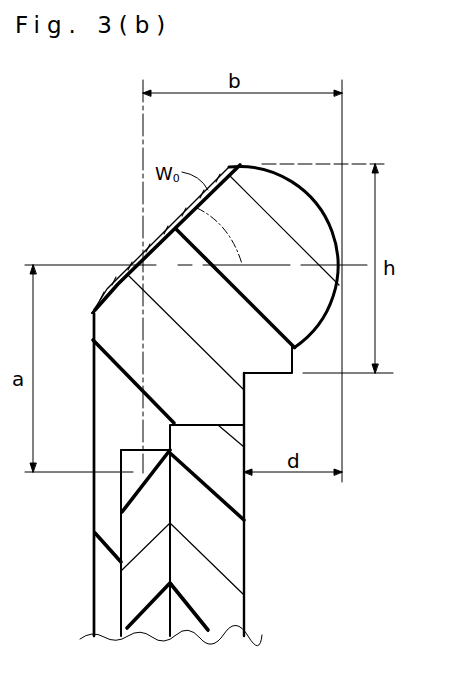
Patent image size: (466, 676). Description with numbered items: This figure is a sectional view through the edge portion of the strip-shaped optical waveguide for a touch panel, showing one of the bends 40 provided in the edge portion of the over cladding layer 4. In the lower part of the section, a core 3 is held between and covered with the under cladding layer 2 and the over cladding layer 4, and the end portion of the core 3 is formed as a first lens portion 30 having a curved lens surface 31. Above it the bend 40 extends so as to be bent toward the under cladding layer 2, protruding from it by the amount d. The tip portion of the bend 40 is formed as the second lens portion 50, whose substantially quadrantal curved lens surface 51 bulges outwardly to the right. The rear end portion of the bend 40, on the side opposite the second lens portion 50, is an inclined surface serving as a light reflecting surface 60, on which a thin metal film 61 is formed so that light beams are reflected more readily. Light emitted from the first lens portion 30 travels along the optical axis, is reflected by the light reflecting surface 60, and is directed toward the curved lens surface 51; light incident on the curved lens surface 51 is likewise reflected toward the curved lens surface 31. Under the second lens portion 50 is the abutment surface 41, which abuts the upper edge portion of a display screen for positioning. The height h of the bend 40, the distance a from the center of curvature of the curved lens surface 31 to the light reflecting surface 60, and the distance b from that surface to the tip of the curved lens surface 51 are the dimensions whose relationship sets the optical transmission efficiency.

The under cladding layer 2 is at (233, 621).
The core 3 is at (133, 570).
The over cladding layer 4 is at (108, 617).
The first lens portion 30 is at (106, 521).
The curved lens surface of first lens portion 31 is at (131, 460).
The bend 40 is at (248, 171).
The abutment surface 41 is at (267, 375).
The second lens portion 50 is at (303, 234).
The curved lens surface of second lens portion 51 is at (326, 213).
The light reflecting surface 60 is at (150, 239).
The thin metal film 61 is at (112, 280).